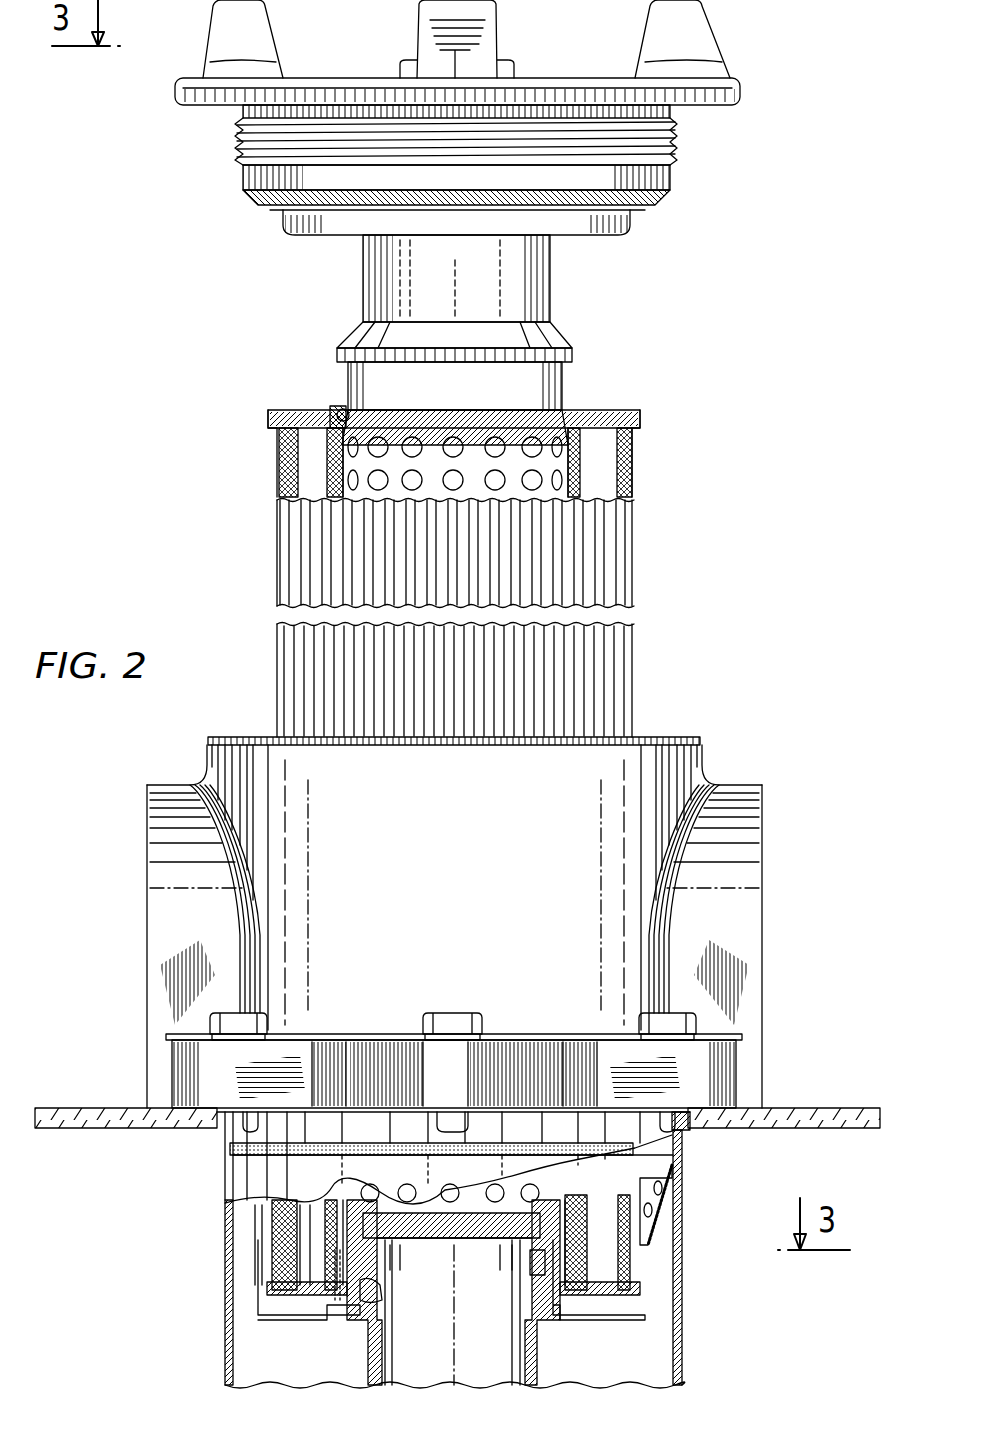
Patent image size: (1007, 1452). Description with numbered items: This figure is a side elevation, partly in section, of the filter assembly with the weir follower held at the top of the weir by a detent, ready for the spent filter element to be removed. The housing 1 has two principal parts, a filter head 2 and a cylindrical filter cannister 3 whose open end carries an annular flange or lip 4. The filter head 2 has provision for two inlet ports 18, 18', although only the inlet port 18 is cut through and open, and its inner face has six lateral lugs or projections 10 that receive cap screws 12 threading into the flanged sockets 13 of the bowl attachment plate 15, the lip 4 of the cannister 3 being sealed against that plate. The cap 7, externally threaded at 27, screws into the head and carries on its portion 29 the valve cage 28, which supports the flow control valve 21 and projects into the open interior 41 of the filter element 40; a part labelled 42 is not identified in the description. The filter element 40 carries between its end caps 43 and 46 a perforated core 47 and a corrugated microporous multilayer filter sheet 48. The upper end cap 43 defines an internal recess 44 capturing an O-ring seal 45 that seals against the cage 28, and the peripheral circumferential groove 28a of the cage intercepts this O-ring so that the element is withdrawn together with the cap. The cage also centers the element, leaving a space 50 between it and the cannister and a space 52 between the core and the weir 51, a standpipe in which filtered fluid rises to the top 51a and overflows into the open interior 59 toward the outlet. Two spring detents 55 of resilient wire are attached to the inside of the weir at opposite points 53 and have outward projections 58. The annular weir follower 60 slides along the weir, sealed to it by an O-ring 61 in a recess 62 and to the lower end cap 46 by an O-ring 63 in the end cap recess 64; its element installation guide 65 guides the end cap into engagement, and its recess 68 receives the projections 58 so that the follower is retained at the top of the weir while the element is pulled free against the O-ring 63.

The housing 1 is at (684, 662).
The filter head 2 is at (692, 770).
The filter cannister 3 is at (680, 1330).
The annular flange or lip 4 is at (685, 1140).
The cap 7 is at (690, 36).
The lateral lugs or projections 10 is at (418, 1060).
The cap screws 12 is at (452, 1013).
The sockets 13 is at (440, 1130).
The bowl attachment plate 15 is at (95, 1128).
The inlet port 18 is at (148, 946).
The inlet port 18' is at (769, 946).
The flow control valve 21 is at (573, 285).
The external threads 27 is at (688, 135).
The valve cage 28 is at (365, 295).
The peripheral circumferential groove 28a is at (357, 415).
The cap portion 29 is at (295, 235).
The filter element 40 is at (656, 524).
The open interior of the filter element 41 is at (545, 462).
The flared flange 42 is at (567, 370).
The end cap 43 is at (616, 408).
The internal recess 44 is at (338, 412).
The O-ring seal 45 is at (340, 405).
The end cap 46 is at (630, 1290).
The perforated core 47 is at (330, 468).
The corrugated microporous multilayer filter sheet 48 is at (285, 558).
The space 50 is at (652, 1147).
The weir 51 is at (537, 1375).
The top of the weir 51a is at (425, 1250).
The space 52 is at (557, 1225).
The attachment points 53 is at (522, 1350).
The spring detents 55 is at (520, 1205).
The outward projection 58 is at (525, 1250).
The open interior of the weir 59 is at (488, 1373).
The weir follower 60 is at (352, 1212).
The O-ring 61 is at (372, 1298).
The recess 62 is at (375, 1318).
The O-ring 63 is at (345, 1305).
The recess 64 is at (338, 1305).
The element installation guide 65 is at (657, 1200).
The recess 68 is at (540, 1272).